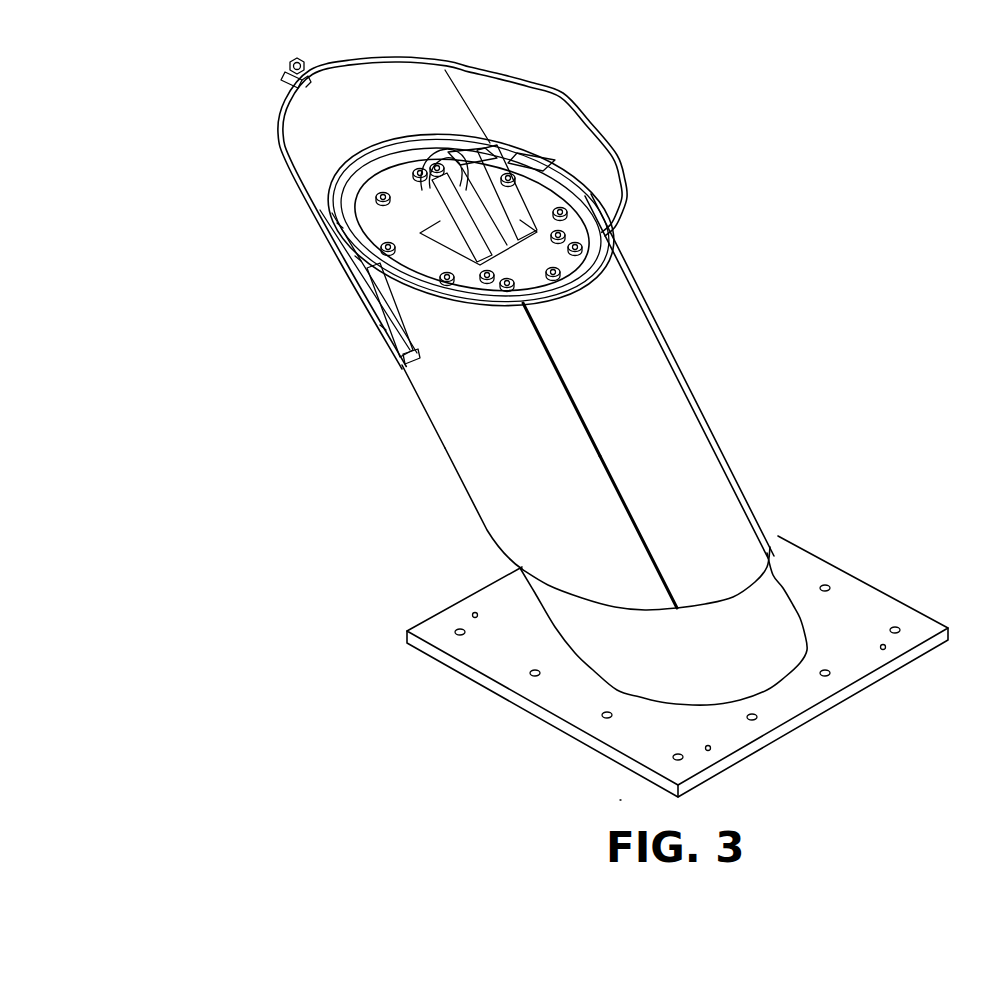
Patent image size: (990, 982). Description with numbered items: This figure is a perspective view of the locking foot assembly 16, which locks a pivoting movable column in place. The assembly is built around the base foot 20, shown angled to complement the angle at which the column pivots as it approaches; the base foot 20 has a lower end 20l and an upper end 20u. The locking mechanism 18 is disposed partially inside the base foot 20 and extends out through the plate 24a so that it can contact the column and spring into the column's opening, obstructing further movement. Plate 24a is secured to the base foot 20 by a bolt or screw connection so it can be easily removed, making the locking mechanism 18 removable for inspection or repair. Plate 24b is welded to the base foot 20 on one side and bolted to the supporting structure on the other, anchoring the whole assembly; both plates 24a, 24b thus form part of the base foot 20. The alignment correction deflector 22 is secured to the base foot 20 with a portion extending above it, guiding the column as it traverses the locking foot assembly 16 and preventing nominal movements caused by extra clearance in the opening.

The locking foot assembly 16 is at (830, 236).
The locking mechanism 18 is at (487, 203).
The base foot 20 is at (700, 397).
The upper end of base foot 20u is at (600, 315).
The lower end of base foot 20l is at (720, 543).
The alignment correction deflector 22 is at (305, 141).
The plate 24a is at (382, 233).
The plate 24b is at (852, 602).